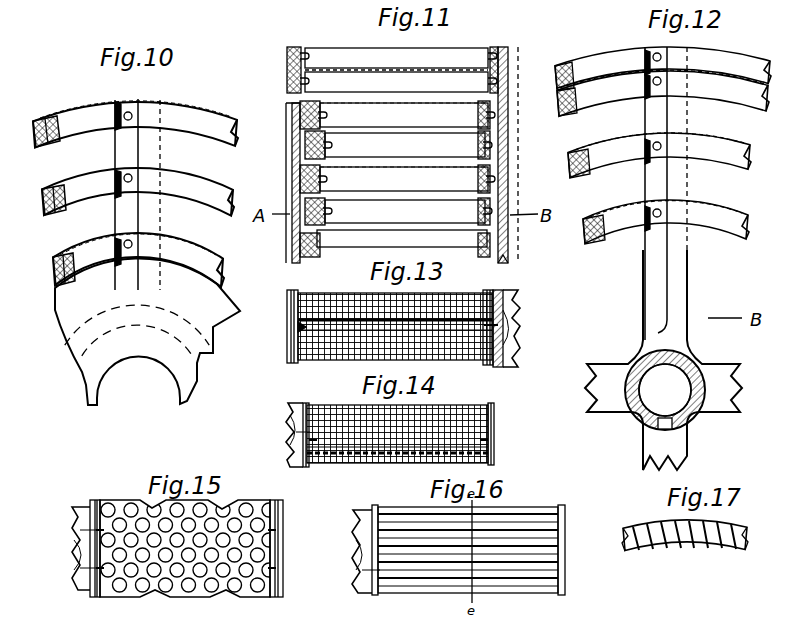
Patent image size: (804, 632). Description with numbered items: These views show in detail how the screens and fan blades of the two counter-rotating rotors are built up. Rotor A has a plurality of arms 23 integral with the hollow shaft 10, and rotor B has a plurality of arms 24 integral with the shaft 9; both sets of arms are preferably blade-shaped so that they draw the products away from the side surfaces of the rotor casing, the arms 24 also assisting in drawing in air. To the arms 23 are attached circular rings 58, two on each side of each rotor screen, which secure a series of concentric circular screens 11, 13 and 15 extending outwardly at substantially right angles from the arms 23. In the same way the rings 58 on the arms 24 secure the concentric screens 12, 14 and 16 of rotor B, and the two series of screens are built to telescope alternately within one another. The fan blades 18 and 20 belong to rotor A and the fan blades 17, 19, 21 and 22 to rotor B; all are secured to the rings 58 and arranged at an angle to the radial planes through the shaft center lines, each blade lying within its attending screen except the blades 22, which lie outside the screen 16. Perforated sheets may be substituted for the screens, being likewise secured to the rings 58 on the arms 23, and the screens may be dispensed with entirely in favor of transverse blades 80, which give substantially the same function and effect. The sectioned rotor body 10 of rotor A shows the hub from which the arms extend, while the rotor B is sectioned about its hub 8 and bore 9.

In FIG. 12, the hub pin 8 is at (640, 368).
In FIG. 12, the shaft 9 is at (636, 384).
In FIG. 10, the hollow shaft 10 is at (70, 350).
In FIG. 10, the screen 11 is at (182, 243).
In FIG. 11, the screen 11 is at (410, 230).
In FIG. 11, the screen 12 is at (414, 200).
In FIG. 12, the screen 12 is at (714, 214).
In FIG. 10, the screen 13 is at (182, 174).
In FIG. 11, the screen 13 is at (414, 167).
In FIG. 11, the screen 14 is at (414, 133).
In FIG. 12, the screen 14 is at (716, 146).
In FIG. 10, the screen 15 is at (186, 110).
In FIG. 11, the screen 15 is at (414, 103).
In FIG. 14, the screen 15 is at (345, 416).
In FIG. 11, the screen 16 is at (414, 70).
In FIG. 12, the screen 16 is at (725, 106).
In FIG. 13, the screen 16 is at (437, 352).
In FIG. 11, the fan blade 17 is at (398, 211).
In FIG. 12, the fan blade 17 is at (646, 220).
In FIG. 10, the fan blade 18 is at (120, 178).
In FIG. 11, the fan blade 18 is at (397, 179).
In FIG. 11, the fan blade 19 is at (398, 145).
In FIG. 12, the fan blade 19 is at (646, 152).
In FIG. 10, the fan blade 20 is at (118, 113).
In FIG. 11, the fan blade 20 is at (397, 115).
In FIG. 14, the fan blade 20 is at (368, 457).
In FIG. 10, the fan blade 21 is at (123, 252).
In FIG. 11, the fan blade 21 is at (398, 82).
In FIG. 12, the fan blade 21 is at (646, 85).
In FIG. 11, the fan blade 22 is at (398, 58).
In FIG. 12, the fan blade 22 is at (646, 60).
In FIG. 13, the fan blade 22 is at (440, 296).
In FIG. 10, the arm 23 is at (152, 146).
In FIG. 11, the arm 23 is at (292, 165).
In FIG. 14, the arm 23 is at (290, 432).
In FIG. 15, the arm 23 is at (82, 558).
In FIG. 16, the arm 23 is at (368, 570).
In FIG. 11, the arm 24 is at (508, 192).
In FIG. 12, the arm 24 is at (675, 300).
In FIG. 13, the arm 24 is at (515, 322).
In FIG. 10, the circular ring 58 is at (34, 122).
In FIG. 11, the circular ring 58 is at (288, 66).
In FIG. 12, the circular ring 58 is at (646, 149).
In FIG. 13, the circular ring 58 is at (290, 328).
In FIG. 14, the circular ring 58 is at (494, 427).
In FIG. 15, the circular ring 58 is at (284, 515).
In FIG. 16, the transverse blade 80 is at (506, 513).
In FIG. 17, the transverse blade 80 is at (652, 530).